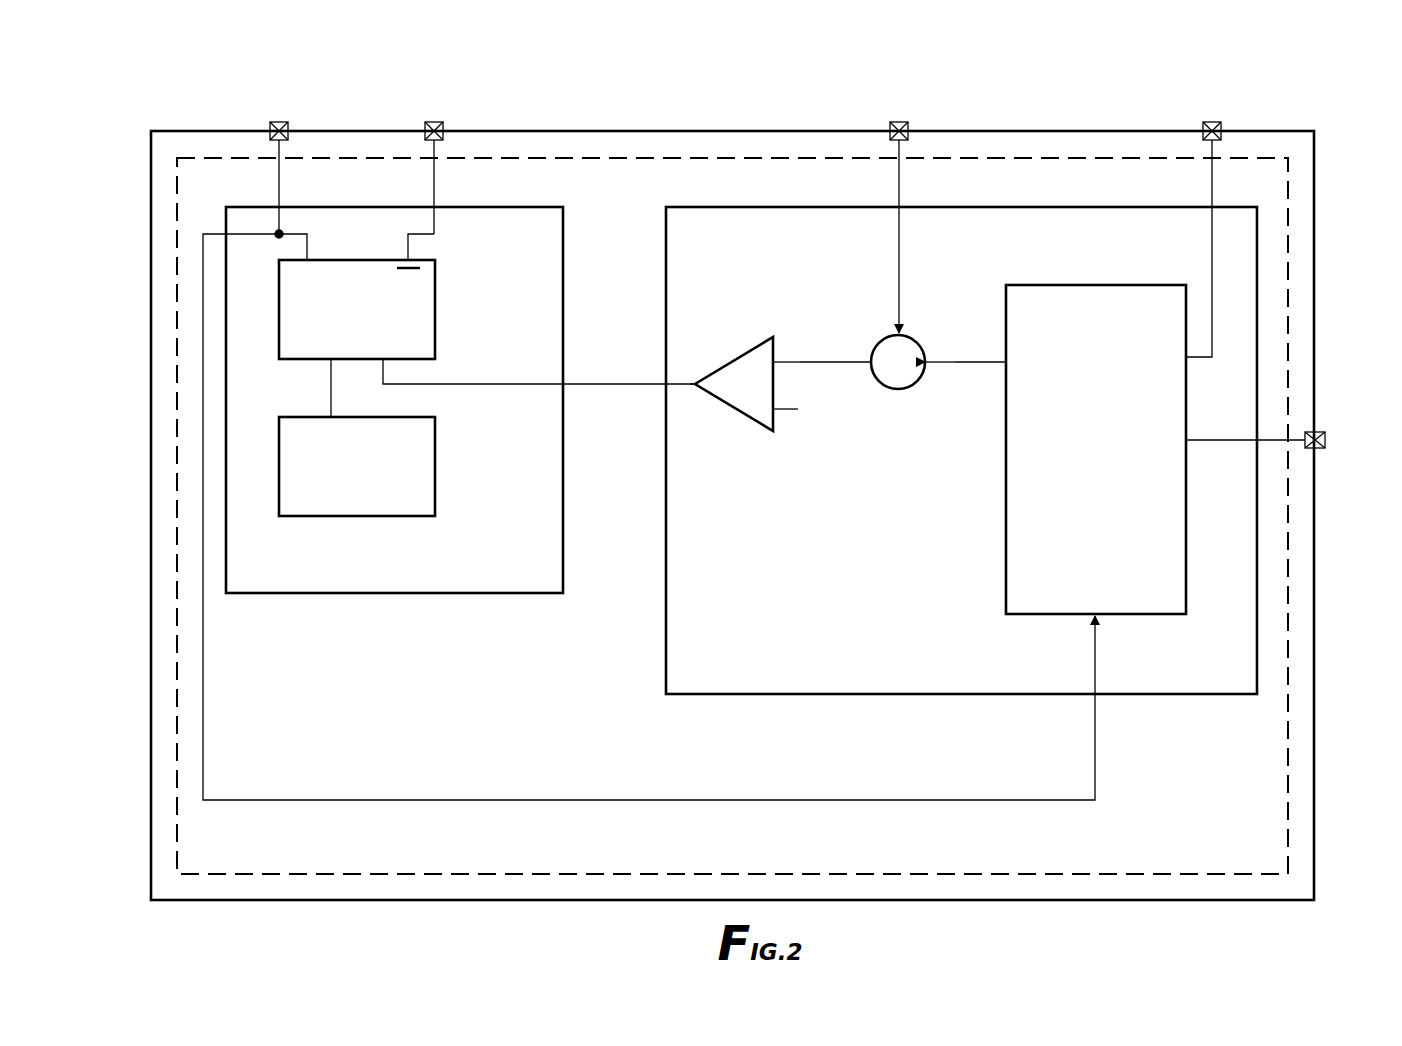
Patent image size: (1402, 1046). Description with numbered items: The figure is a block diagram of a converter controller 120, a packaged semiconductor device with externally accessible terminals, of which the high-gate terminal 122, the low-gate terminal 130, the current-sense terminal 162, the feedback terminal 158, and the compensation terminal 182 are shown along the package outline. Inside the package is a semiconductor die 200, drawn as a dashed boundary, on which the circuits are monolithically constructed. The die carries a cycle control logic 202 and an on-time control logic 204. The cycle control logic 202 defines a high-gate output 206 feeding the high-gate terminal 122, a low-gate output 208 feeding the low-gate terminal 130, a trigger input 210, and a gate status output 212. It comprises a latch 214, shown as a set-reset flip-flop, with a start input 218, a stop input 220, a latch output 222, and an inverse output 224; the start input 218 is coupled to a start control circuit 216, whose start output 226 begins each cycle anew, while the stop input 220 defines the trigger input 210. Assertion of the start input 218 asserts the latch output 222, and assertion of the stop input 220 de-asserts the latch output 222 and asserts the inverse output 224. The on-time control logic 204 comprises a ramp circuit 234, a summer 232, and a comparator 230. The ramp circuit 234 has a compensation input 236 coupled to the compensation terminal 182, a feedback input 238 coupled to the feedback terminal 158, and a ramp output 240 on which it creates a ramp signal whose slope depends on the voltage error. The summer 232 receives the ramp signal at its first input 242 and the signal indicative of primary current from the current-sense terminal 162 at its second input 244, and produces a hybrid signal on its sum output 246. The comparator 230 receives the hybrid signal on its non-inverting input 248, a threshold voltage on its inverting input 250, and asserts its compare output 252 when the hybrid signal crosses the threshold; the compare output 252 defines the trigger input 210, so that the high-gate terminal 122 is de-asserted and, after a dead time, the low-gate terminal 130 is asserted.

The converter controller 120 is at (146, 96).
The high-gate terminal 122 is at (272, 122).
The low-gate terminal 130 is at (444, 122).
The feedback terminal 158 is at (1218, 122).
The current-sense terminal 162 is at (908, 124).
The compensation terminal 182 is at (1318, 430).
The semiconductor die 200 is at (177, 178).
The cycle control logic 202 is at (385, 594).
The on-time control logic 204 is at (745, 599).
The high-gate output 206 is at (281, 206).
The low-gate output 208 is at (438, 206).
The trigger input 210 is at (565, 384).
The gate status output 212 is at (226, 233).
The latch 214 is at (437, 303).
The start control circuit 216 is at (437, 446).
The start input 218 is at (328, 362).
The stop input 220 is at (388, 373).
The latch output 222 is at (309, 258).
The inverse output 224 is at (412, 257).
The start output 226 is at (329, 414).
The comparator 230 is at (724, 358).
The summer 232 is at (910, 322).
The ramp circuit 234 is at (1073, 491).
The compensation input 236 is at (1188, 444).
The feedback input 238 is at (1188, 362).
The ramp output 240 is at (1000, 370).
The first input 242 is at (927, 350).
The second input 244 is at (884, 340).
The sum output 246 is at (876, 372).
The non-inverting input 248 is at (777, 355).
The inverting input 250 is at (776, 414).
The compare output 252 is at (699, 390).